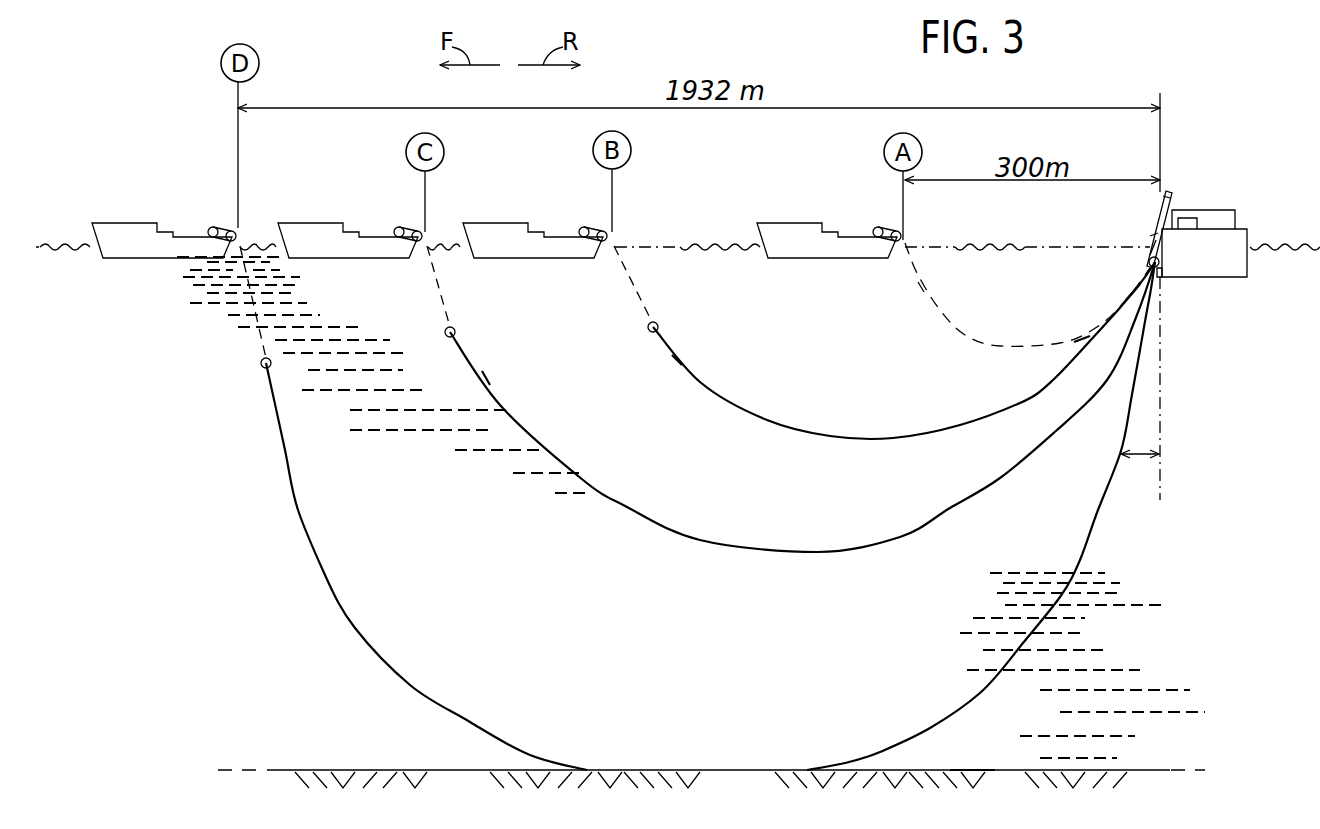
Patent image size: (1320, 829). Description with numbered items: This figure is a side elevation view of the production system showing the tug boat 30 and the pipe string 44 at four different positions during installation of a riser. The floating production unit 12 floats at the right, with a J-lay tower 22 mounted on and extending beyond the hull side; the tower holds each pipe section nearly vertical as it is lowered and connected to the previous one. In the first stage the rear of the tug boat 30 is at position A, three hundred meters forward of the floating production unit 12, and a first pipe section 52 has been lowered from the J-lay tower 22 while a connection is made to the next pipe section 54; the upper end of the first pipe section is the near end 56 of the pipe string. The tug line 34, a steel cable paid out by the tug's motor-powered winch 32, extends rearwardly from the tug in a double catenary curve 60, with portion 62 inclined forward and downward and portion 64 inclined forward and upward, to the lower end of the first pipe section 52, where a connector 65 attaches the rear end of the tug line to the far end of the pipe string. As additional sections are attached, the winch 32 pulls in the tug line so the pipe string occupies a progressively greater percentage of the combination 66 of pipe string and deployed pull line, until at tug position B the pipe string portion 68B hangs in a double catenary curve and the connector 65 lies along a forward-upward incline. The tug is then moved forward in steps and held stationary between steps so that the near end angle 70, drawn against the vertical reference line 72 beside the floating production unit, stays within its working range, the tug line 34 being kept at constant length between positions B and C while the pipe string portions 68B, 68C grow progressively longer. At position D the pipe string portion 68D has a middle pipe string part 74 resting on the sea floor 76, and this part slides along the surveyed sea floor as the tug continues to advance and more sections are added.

The floating production unit 12 is at (1252, 222).
The J-lay tower 22 is at (1180, 194).
The tug boat 30 is at (782, 212).
The winch 32 is at (906, 237).
The tug line 34 is at (445, 305).
The pipe string 44 is at (797, 556).
The first pipe section 52 is at (1146, 250).
The next pipe section 54 is at (1158, 200).
The near end 56 is at (1146, 233).
The double catenary curve 60 is at (990, 345).
The tug line portion 62 is at (1133, 287).
The tug line portion 64 is at (920, 290).
The connector 65 is at (262, 362).
The combination of pipe string and deployed pull line 66 is at (488, 374).
The pipe string portion 68B is at (904, 425).
The pipe string portion 68C is at (650, 527).
The pipe string portion 68D is at (357, 628).
The near end angle 70 is at (1127, 457).
The vertical reference line 72 is at (1162, 437).
The pipe string part 74 is at (738, 770).
The sea floor 76 is at (972, 770).